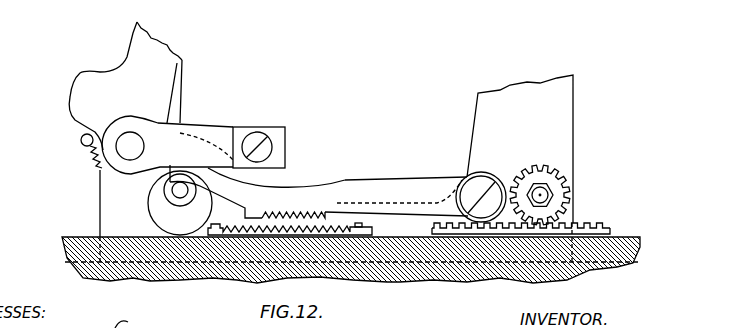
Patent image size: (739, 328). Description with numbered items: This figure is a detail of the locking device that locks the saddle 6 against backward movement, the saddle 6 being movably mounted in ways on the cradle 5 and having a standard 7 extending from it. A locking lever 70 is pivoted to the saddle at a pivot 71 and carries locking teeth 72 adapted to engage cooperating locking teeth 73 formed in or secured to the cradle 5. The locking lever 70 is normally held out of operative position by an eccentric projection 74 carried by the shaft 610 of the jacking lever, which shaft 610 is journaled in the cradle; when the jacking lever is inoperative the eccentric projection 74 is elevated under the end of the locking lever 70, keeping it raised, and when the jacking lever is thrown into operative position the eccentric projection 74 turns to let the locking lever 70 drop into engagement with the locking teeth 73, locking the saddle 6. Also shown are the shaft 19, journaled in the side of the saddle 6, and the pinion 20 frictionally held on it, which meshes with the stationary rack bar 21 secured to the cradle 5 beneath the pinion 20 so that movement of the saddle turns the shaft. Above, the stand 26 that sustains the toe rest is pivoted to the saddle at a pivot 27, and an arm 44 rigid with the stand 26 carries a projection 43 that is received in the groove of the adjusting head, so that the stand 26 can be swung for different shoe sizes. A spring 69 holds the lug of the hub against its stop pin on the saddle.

The cradle 5 is at (453, 268).
The saddle 6 is at (290, 175).
The standard 7 is at (567, 113).
The shaft 19 is at (547, 192).
The pinion 20 is at (570, 196).
The stationary rack bar 21 is at (598, 227).
The stand 26 is at (163, 66).
The pivot 27 is at (128, 149).
The projection 43 is at (277, 130).
The arm 44 is at (206, 125).
The spring 69 is at (93, 152).
The locking lever 70 is at (320, 197).
The pivot 71 is at (465, 177).
The locking teeth 72 is at (285, 207).
The locking teeth 73 is at (267, 230).
The eccentric projection 74 is at (180, 190).
The shaft 610 is at (157, 208).